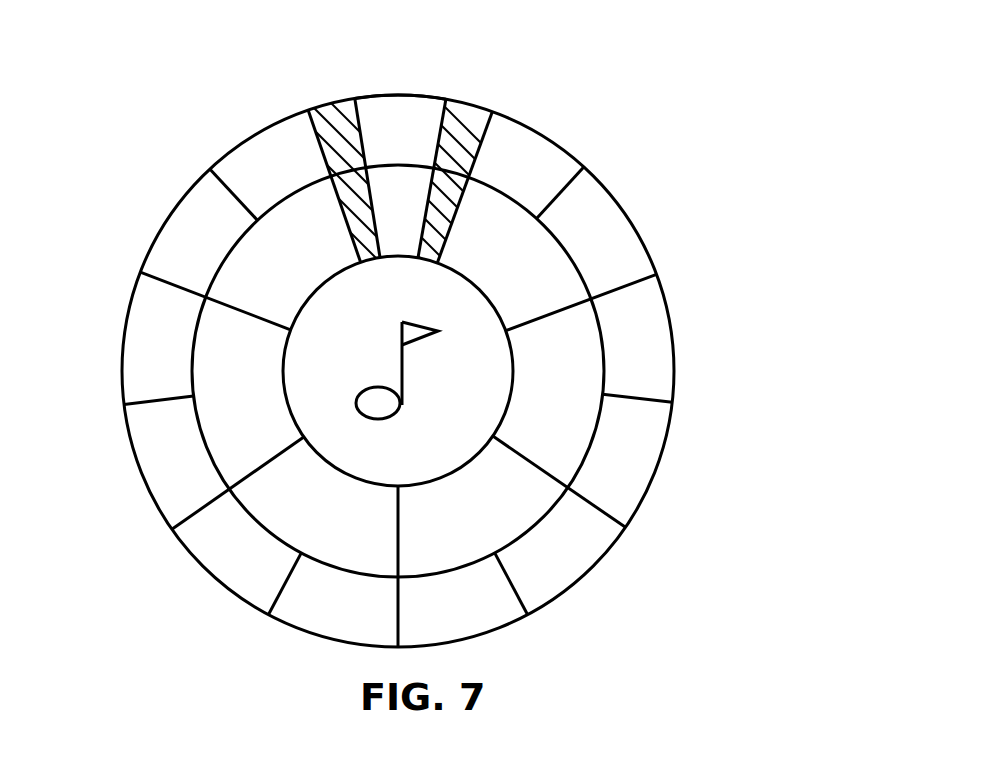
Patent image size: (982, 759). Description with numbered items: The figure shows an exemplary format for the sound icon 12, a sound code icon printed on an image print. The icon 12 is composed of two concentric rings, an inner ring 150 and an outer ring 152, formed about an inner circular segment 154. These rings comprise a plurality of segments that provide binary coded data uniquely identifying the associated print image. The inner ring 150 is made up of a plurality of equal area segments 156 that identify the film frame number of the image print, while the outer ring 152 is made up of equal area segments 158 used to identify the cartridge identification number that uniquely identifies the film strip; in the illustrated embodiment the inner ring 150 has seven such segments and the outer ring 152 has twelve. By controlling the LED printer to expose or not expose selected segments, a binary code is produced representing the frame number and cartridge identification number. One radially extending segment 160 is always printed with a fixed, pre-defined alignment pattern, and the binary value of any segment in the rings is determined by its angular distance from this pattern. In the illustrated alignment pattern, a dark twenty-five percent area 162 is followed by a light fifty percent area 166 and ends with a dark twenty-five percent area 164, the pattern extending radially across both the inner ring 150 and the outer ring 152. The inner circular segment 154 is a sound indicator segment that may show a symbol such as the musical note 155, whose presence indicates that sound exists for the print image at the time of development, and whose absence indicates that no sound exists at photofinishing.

The sound icon 12 is at (603, 153).
The inner ring 150 is at (517, 543).
The outer ring 152 is at (638, 506).
The inner circular segment 154 is at (500, 433).
The musical note 155 is at (404, 378).
The segments 156 is at (250, 278).
The segments 158 is at (262, 573).
The radially extending segment 160 is at (376, 90).
The dark 25% area 162 is at (340, 143).
The dark 25% area 164 is at (455, 158).
The light 50% area 166 is at (403, 110).